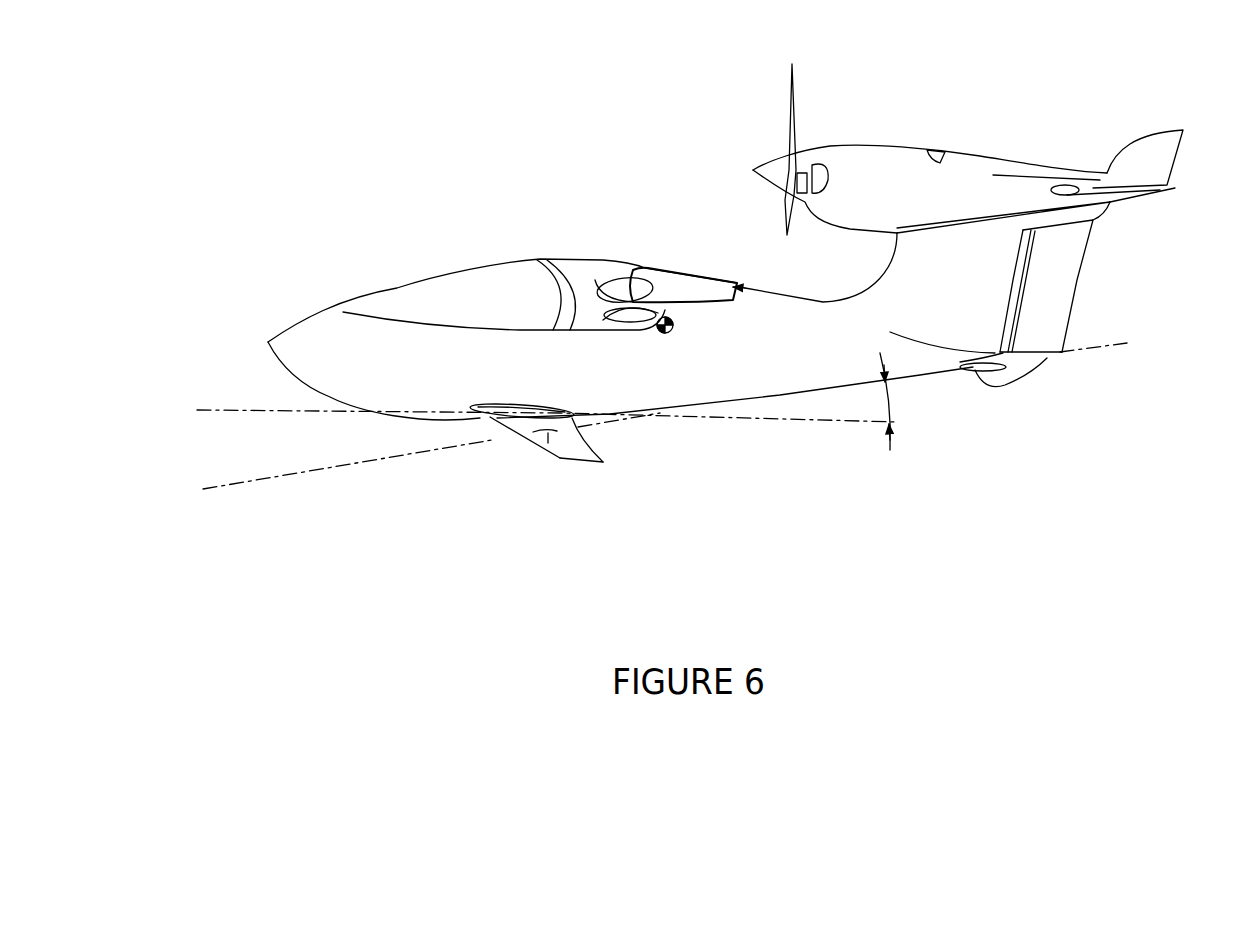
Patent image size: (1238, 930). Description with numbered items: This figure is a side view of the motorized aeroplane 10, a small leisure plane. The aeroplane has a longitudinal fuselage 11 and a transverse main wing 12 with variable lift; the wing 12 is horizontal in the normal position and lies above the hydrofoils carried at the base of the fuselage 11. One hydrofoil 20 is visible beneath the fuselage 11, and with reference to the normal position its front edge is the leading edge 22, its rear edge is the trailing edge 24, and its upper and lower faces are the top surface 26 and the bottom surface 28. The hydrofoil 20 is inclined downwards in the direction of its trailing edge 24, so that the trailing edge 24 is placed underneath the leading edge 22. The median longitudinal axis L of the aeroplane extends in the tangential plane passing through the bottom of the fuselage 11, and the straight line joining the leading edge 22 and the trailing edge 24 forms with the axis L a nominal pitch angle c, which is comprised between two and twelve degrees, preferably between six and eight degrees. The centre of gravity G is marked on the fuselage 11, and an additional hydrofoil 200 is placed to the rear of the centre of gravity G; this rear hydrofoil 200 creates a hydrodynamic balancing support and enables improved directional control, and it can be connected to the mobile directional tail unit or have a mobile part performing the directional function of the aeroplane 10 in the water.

The motorized aeroplane 10 is at (631, 243).
The longitudinal fuselage 11 is at (717, 341).
The transverse main wing 12 is at (968, 208).
The hydrofoil 20 is at (582, 507).
The leading edge 22 is at (546, 457).
The trailing edge 24 is at (588, 442).
The top surface 26 is at (547, 436).
The bottom surface 28 is at (565, 461).
The additional hydrofoil 200 is at (1016, 385).
The centre of gravity G is at (675, 318).
The median longitudinal axis L is at (291, 477).
The nominal pitch angle c is at (879, 401).